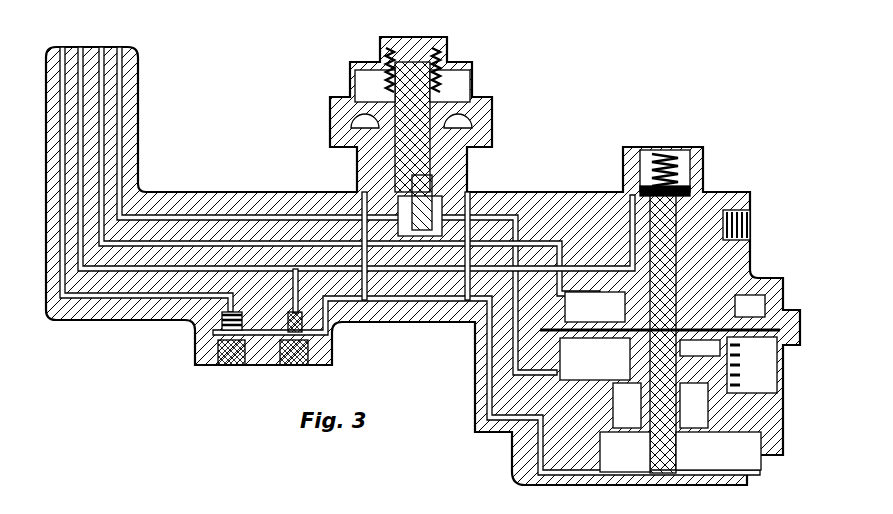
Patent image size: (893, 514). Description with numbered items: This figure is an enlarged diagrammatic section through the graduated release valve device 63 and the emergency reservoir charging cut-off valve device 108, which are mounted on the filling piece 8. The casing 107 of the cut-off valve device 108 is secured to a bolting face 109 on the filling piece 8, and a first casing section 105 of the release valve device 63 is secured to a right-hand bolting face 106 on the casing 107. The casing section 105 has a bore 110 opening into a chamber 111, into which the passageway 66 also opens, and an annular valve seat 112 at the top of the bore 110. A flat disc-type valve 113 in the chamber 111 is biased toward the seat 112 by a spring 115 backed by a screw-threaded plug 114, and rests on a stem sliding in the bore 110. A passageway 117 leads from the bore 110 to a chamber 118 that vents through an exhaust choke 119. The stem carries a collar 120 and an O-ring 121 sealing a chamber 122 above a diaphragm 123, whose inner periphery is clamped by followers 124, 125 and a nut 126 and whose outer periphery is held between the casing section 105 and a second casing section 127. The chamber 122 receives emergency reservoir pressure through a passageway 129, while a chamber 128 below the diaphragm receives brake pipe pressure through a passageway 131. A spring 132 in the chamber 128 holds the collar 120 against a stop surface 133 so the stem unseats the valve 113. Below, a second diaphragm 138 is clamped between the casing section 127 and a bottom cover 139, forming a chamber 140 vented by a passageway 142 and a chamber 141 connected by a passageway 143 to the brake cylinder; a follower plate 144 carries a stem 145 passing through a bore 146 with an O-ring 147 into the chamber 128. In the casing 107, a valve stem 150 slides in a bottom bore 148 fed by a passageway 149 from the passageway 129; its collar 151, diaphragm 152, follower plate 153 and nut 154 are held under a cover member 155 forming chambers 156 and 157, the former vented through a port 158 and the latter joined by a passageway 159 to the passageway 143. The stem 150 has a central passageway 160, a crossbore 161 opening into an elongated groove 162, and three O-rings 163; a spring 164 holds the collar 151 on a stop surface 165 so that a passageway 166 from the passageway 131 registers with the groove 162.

The filling piece 8 is at (138, 124).
The graduated release valve device 63 is at (750, 252).
The passageway 66 is at (81, 47).
The first casing section 105 is at (580, 194).
The right-hand bolting face 106 is at (470, 196).
The casing 107 is at (398, 163).
The emergency reservoir charging cut-off valve device 108 is at (492, 118).
The bolting face 109 is at (360, 211).
The bore 110 is at (670, 262).
The chamber 111 is at (695, 188).
The annular valve seat 112 is at (700, 197).
The flat disc-type valve 113 is at (640, 190).
The screw-threaded plug 114 is at (648, 150).
The spring 115 is at (665, 152).
The passageway 117 is at (677, 252).
The chamber 118 is at (740, 220).
The exhaust choke 119 is at (748, 224).
The collar 120 is at (690, 302).
The O-ring 121 is at (670, 295).
The chamber 122 is at (760, 320).
The diaphragm 123 is at (790, 337).
The diaphragm follower 124 is at (766, 306).
The diaphragm follower 125 is at (735, 352).
The nut 126 is at (700, 350).
The second casing section 127 is at (770, 390).
The chamber 128 is at (755, 368).
The passageway 129 is at (102, 47).
The passageway 131 is at (122, 103).
The spring 132 is at (742, 395).
The stop surface 133 is at (600, 297).
The second diaphragm 138 is at (712, 485).
The bottom cover 139 is at (570, 484).
The chamber 140 is at (737, 453).
The chamber 141 is at (745, 485).
The passageway 142 is at (775, 440).
The passageway 143 is at (62, 47).
The diaphragm follower plate 144 is at (660, 447).
The stem 145 is at (625, 400).
The bore 146 is at (612, 364).
The O-ring 147 is at (694, 412).
The bottom bore 148 is at (445, 214).
The passageway 149 is at (410, 240).
The valve stem 150 is at (405, 135).
The collar 151 is at (470, 135).
The annular diaphragm 152 is at (478, 106).
The diaphragm follower plate 153 is at (445, 92).
The nut 154 is at (445, 75).
The cover member 155 is at (372, 88).
The chamber 156 is at (382, 58).
The chamber 157 is at (362, 120).
The port 158 is at (357, 90).
The passageway 159 is at (372, 150).
The central passageway 160 is at (412, 222).
The crossbore 161 is at (395, 178).
The elongated peripheral annular groove 162 is at (362, 200).
The O-ring 163 is at (428, 170).
The spring 164 is at (440, 50).
The stop surface 165 is at (470, 150).
The passageway 166 is at (455, 170).